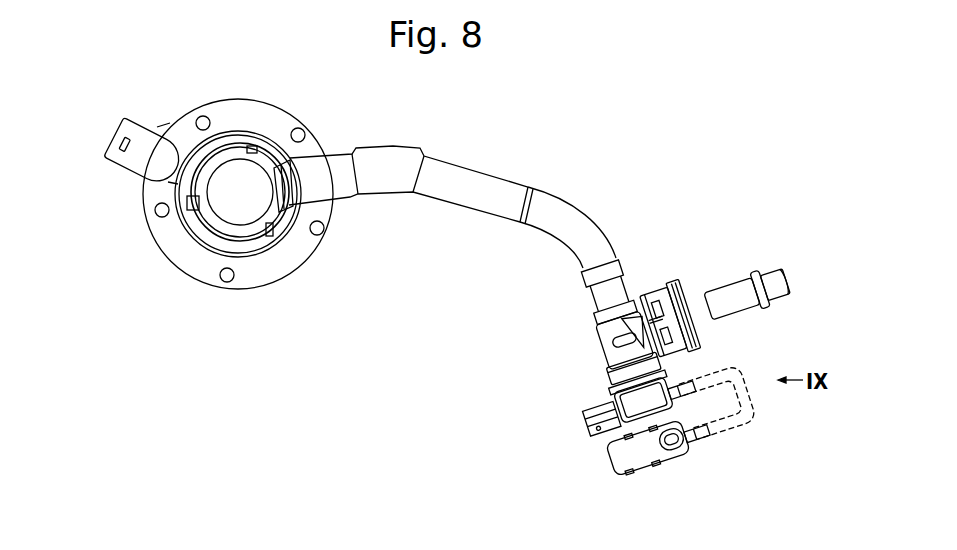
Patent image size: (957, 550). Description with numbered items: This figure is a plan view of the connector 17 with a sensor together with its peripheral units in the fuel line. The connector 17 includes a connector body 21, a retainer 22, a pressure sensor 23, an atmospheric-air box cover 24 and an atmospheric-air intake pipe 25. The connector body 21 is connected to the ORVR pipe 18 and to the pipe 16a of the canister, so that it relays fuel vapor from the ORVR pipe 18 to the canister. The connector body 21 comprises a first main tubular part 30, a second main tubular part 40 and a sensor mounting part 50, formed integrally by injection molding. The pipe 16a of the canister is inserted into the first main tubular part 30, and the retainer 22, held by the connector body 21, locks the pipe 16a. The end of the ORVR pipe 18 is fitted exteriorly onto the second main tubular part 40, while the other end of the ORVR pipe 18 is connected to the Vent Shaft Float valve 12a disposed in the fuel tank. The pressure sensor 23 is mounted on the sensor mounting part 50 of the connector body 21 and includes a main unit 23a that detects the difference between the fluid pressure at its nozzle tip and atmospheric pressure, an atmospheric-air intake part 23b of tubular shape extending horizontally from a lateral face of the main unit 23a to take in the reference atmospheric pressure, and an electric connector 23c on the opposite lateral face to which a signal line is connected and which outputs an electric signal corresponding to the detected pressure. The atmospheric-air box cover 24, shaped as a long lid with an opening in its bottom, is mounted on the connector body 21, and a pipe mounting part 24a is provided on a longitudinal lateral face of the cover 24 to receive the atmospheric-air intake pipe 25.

The Vent Shaft Float (VSF) valve 12a is at (239, 290).
The ORVR pipe 18 is at (583, 206).
The second main tubular part 40 is at (600, 314).
The connector body 21 is at (594, 338).
The sensor mounting part 50 is at (617, 373).
The connector with a sensor 17 is at (681, 268).
The first main tubular part 30 is at (648, 298).
The retainer 22 is at (688, 292).
The pipe 16a is at (770, 268).
The pressure sensor 23 is at (592, 443).
The main unit 23a is at (628, 400).
The atmospheric-air intake part 23b is at (681, 386).
The electric connector 23c is at (597, 422).
The atmospheric-air box cover 24 is at (627, 478).
The pipe mounting part 24a is at (700, 443).
The atmospheric-air intake pipe 25 is at (747, 424).